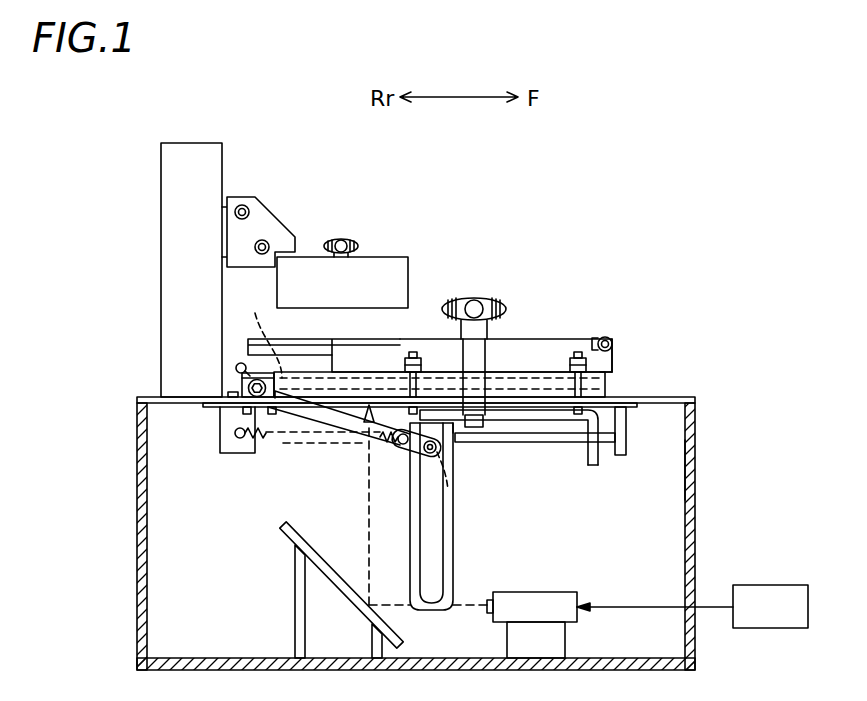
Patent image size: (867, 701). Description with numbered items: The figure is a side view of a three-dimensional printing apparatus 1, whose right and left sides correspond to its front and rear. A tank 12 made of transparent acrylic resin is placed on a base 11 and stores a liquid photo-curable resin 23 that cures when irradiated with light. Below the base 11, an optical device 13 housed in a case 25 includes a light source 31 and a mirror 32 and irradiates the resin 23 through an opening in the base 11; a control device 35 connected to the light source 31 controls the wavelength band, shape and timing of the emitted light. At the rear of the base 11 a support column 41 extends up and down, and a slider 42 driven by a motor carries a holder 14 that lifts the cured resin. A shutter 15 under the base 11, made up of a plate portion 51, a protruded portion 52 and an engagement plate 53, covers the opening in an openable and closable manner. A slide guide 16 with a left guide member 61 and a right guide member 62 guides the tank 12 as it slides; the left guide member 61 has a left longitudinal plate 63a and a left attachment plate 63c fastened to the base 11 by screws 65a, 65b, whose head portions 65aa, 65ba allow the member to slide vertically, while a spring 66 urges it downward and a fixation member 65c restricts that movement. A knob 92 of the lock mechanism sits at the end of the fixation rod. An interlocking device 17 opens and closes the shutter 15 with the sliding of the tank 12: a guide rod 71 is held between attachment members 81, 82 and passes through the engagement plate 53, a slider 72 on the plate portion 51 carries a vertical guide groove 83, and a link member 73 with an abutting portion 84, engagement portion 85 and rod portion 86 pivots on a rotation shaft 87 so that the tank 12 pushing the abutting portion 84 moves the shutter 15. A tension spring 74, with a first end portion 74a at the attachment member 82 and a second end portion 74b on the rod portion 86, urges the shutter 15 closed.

The three-dimensional printing apparatus 1 is at (593, 228).
The base 11 is at (696, 399).
The tank 12 is at (642, 397).
The optical device 13 is at (536, 582).
The holder 14 is at (392, 257).
The shutter 15 is at (572, 425).
The slide guide 16 is at (612, 307).
The interlocking device 17 is at (378, 450).
The photo-curable resin 23 is at (260, 332).
The case 25 is at (697, 468).
The light source 31 is at (550, 592).
The mirror 32 is at (284, 519).
The control device 35 is at (757, 585).
The support column 41 is at (201, 143).
The slider 42 is at (273, 213).
The plate portion 51 is at (520, 432).
The protruded portion 52 is at (393, 450).
The engagement plate 53 is at (597, 466).
The left guide member 61 is at (517, 337).
The right guide member 62 is at (248, 346).
The left longitudinal plate 63a is at (527, 338).
The left attachment plate 63c is at (536, 372).
The screw 65a is at (577, 346).
The head portion 65aa is at (599, 340).
The screw 65b is at (405, 342).
The head portion 65ba is at (414, 350).
The fixation member 65c is at (482, 298).
The spring 66 is at (613, 367).
The guide rod 71 is at (468, 445).
The slider 72 is at (455, 537).
The link member 73 is at (255, 453).
The tension spring 74 is at (318, 447).
The first end portion 74a is at (236, 440).
The second end portion 74b is at (396, 445).
The attachment member 81 is at (626, 455).
The attachment member 82 is at (220, 422).
The guide groove 83 is at (437, 565).
The abutting portion 84 is at (238, 366).
The engagement portion 85 is at (448, 490).
The rod portion 86 is at (297, 418).
The rotation shaft 87 is at (242, 386).
The knob 92 is at (613, 344).